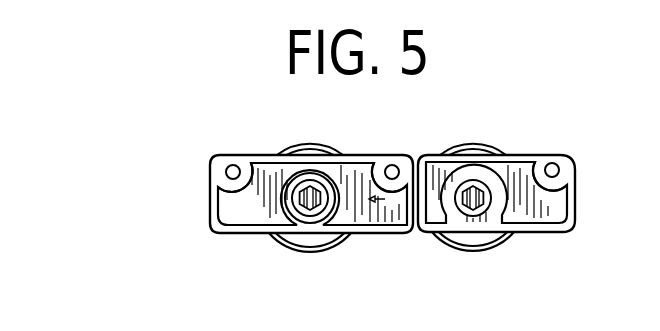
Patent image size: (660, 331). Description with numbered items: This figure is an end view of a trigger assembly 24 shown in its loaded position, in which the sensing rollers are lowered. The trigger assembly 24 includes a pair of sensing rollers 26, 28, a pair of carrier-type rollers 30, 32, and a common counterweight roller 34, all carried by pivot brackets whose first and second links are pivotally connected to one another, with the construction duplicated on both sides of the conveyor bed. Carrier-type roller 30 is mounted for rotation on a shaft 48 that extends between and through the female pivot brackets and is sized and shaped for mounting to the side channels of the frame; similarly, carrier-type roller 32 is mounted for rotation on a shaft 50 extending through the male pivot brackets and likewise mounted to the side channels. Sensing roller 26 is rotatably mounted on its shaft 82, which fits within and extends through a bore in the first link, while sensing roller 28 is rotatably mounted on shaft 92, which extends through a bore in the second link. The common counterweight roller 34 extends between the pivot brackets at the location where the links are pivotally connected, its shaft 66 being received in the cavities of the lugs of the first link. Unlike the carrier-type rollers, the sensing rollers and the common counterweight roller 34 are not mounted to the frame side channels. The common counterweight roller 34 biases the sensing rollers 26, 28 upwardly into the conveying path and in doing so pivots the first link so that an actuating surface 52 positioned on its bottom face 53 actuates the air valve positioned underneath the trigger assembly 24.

The trigger assembly 24 is at (511, 108).
The sensing roller 26 is at (230, 154).
The sensing roller 28 is at (553, 152).
The carrier-type roller 30 is at (316, 252).
The carrier-type roller 32 is at (458, 249).
The common counterweight roller 34 is at (393, 154).
The shaft 48 is at (310, 198).
The shaft 50 is at (473, 198).
The actuating surface 52 is at (402, 234).
The bottom face 53 is at (250, 234).
The shaft 66 is at (392, 172).
The shaft 82 is at (233, 172).
The shaft 92 is at (552, 170).